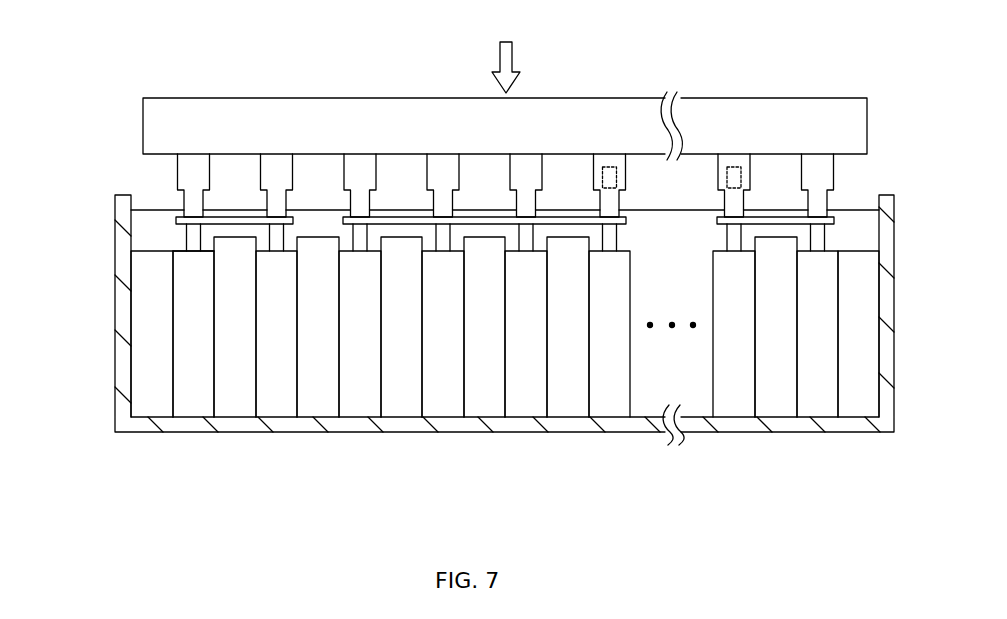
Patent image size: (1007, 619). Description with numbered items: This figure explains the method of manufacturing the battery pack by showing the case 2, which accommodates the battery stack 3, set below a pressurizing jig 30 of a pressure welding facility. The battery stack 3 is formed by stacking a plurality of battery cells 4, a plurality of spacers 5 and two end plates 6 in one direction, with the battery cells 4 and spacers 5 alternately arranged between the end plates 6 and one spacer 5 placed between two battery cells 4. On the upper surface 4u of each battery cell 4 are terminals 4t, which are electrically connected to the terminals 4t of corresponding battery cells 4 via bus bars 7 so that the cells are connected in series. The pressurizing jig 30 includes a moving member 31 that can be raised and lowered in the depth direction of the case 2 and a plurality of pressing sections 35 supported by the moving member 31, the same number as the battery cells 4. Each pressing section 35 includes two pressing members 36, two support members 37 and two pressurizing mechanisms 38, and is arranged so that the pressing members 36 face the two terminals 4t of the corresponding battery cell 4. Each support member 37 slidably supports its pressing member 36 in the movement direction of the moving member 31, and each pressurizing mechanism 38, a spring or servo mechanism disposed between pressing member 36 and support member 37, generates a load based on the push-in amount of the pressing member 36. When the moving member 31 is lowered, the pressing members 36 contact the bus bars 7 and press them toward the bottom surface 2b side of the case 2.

The case 2 is at (113, 403).
The bottom surface of the case 2b is at (650, 403).
The battery stack 3 is at (687, 373).
The battery cell 4 is at (191, 403).
The terminal 4t is at (187, 240).
The upper surface 4u is at (178, 245).
The spacer 5 is at (233, 403).
The end plate 6 is at (150, 403).
The bus bar 7 is at (230, 217).
The pressurizing jig 30 is at (132, 149).
The moving member 31 is at (838, 122).
The pressing section 35 is at (252, 163).
The pressing member 36 is at (718, 212).
The support member 37 is at (518, 165).
The pressurizing mechanism 38 is at (732, 182).